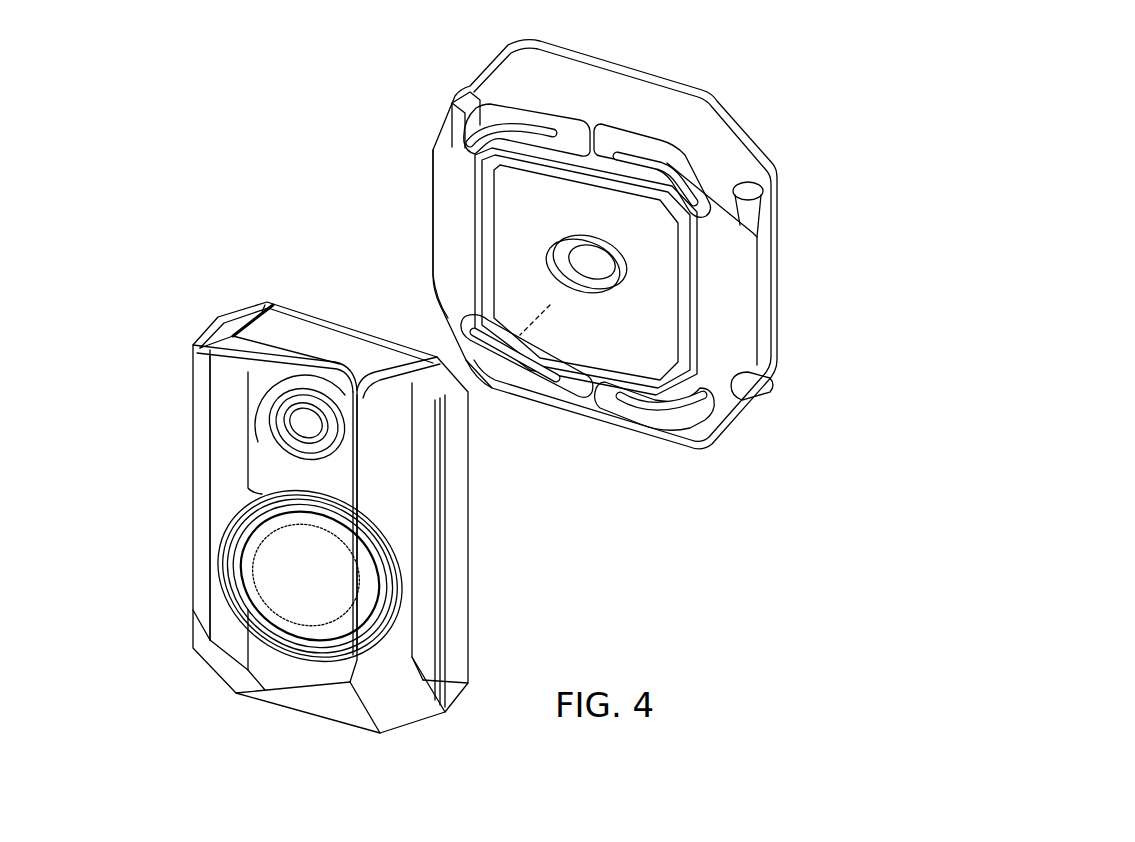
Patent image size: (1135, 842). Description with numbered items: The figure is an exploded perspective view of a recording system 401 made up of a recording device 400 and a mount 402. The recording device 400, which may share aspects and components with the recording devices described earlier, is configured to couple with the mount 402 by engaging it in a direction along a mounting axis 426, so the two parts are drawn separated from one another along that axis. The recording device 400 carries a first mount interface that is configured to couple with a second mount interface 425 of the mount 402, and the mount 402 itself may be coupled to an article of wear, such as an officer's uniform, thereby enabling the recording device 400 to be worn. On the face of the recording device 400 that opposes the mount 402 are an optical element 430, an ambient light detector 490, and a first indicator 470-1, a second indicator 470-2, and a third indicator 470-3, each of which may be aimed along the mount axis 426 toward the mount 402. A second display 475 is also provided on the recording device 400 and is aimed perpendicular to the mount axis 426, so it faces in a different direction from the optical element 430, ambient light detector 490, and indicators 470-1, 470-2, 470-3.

The recording device 400 is at (126, 309).
The recording system 401 is at (885, 109).
The mount 402 is at (430, 200).
The second mount interface 425 is at (620, 292).
The mounting axis 426 is at (487, 383).
The optical element 430 is at (270, 417).
The second display 475 is at (277, 313).
The ambient light detector 490 is at (305, 479).
The first indicator 470-1 is at (357, 568).
The second indicator 470-2 is at (313, 633).
The third indicator 470-3 is at (250, 536).